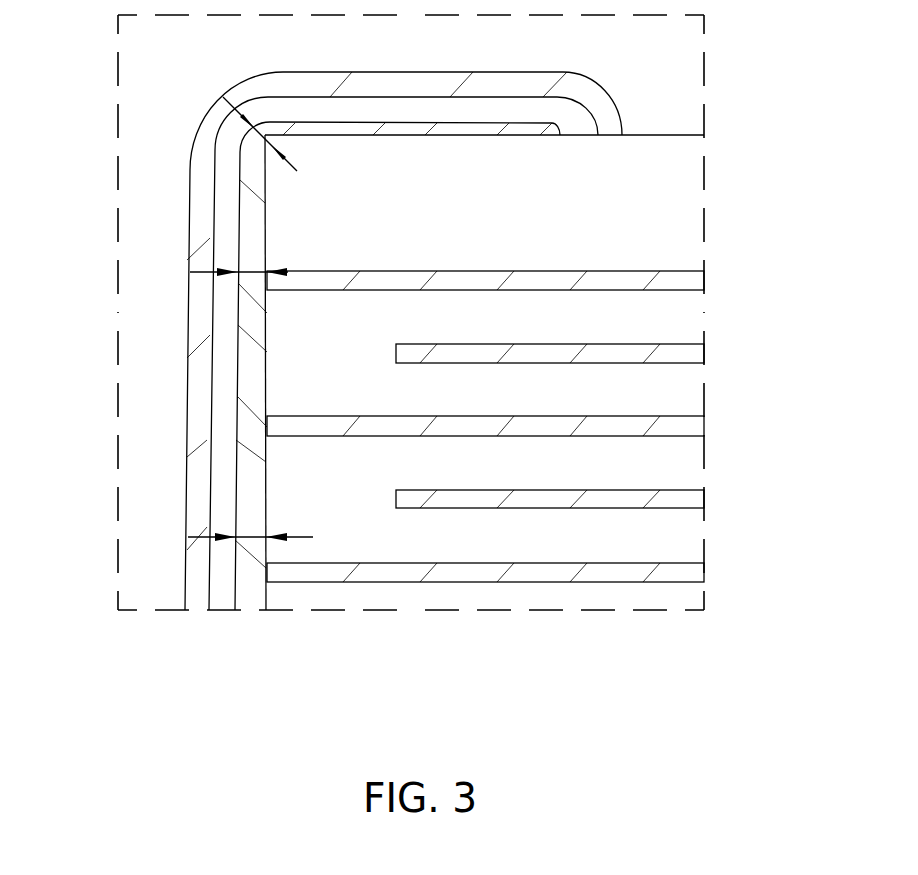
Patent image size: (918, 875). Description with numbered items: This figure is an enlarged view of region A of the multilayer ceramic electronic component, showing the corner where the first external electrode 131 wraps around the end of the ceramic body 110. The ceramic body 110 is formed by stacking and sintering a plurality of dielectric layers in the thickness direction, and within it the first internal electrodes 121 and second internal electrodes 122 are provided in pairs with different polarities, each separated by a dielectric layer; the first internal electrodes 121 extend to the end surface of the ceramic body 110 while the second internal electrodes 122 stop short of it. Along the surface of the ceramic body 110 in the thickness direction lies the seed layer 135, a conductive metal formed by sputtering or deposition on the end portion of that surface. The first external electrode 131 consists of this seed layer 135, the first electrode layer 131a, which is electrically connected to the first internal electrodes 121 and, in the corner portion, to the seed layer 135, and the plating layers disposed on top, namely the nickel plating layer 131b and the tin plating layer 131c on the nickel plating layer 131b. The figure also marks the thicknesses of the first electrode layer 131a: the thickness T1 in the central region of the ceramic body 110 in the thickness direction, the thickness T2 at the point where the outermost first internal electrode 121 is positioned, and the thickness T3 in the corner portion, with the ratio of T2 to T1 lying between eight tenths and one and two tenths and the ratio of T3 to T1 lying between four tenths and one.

The ceramic body 110 is at (668, 134).
The first internal electrodes 121 is at (683, 280).
The second internal electrodes 122 is at (683, 352).
The first external electrode 131 is at (374, 398).
The first electrode layer 131a is at (245, 600).
The nickel plating layer 131b is at (222, 600).
The tin plating layer 131c is at (297, 682).
The seed layer 135 is at (357, 127).
The thickness of first electrode layer in central region T1 is at (244, 528).
The thickness of first electrode layer at outermost internal electrode T2 is at (253, 270).
The thickness of first electrode layer in corner portion T3 is at (240, 148).
The region A is at (413, 738).